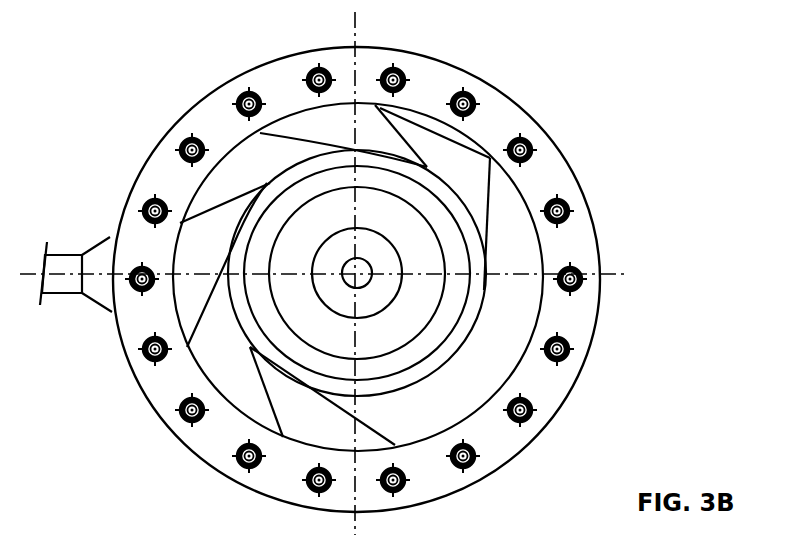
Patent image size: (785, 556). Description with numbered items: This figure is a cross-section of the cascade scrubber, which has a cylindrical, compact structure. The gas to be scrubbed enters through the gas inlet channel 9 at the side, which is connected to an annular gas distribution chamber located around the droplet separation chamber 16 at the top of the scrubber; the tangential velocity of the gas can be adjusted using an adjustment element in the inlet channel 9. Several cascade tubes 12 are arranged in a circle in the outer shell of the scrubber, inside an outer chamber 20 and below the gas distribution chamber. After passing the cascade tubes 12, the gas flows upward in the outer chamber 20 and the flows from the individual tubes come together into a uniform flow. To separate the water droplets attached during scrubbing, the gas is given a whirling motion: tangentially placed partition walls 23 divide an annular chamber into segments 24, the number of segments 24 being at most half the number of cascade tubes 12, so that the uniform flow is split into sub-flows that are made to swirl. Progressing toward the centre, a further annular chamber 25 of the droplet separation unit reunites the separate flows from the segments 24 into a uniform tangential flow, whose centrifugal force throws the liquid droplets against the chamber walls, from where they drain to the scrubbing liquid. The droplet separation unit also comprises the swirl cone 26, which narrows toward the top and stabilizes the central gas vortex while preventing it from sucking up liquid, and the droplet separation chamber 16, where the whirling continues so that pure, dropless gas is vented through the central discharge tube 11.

The gas inlet channel 9 is at (60, 262).
The outer chamber 20 is at (505, 106).
The cascade tubes 12 is at (540, 138).
The segments 24 is at (510, 203).
The annular chamber 25 is at (484, 258).
The swirl cone 26 is at (478, 290).
The droplet separation chamber 16 is at (478, 293).
The discharge tube 11 is at (377, 310).
The partition walls 23 is at (397, 128).